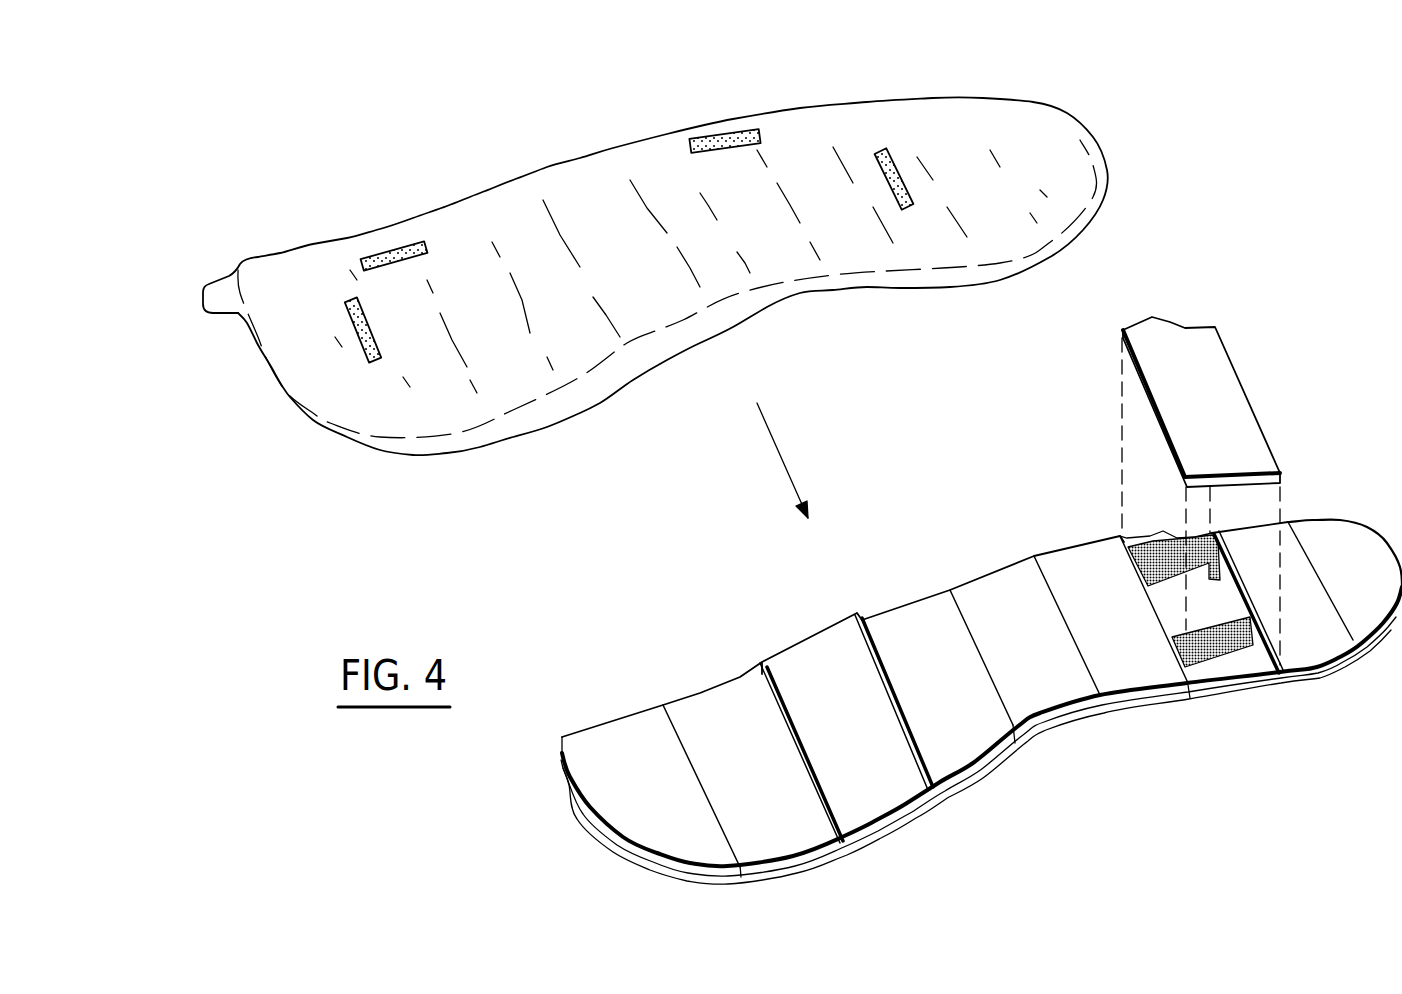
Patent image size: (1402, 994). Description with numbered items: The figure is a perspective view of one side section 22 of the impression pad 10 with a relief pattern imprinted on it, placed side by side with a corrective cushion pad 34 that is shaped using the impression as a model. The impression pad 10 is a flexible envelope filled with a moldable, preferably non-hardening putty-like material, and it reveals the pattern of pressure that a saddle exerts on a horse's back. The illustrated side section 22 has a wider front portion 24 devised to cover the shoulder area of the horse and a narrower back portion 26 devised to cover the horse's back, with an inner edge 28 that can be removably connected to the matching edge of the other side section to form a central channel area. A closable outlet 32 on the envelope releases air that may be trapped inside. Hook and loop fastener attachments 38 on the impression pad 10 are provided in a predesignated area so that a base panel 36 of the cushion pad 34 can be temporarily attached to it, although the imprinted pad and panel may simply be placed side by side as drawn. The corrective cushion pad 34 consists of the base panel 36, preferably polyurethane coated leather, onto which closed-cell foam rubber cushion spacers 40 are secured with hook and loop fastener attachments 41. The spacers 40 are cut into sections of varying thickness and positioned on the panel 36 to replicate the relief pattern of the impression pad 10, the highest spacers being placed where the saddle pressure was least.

The impression pad 10 is at (437, 150).
The side section 22 is at (608, 235).
The front portion 24 is at (1035, 160).
The back portion 26 is at (265, 278).
The inner edge 28 is at (590, 150).
The closable outlet 32 is at (212, 300).
The corrective cushion pad 34 is at (665, 660).
The base panel 36 is at (1250, 663).
The hook and loop fastener attachments 38 is at (393, 252).
The cushion spacers 40 is at (1226, 389).
The hook and loop fastener attachments 41 is at (1150, 545).